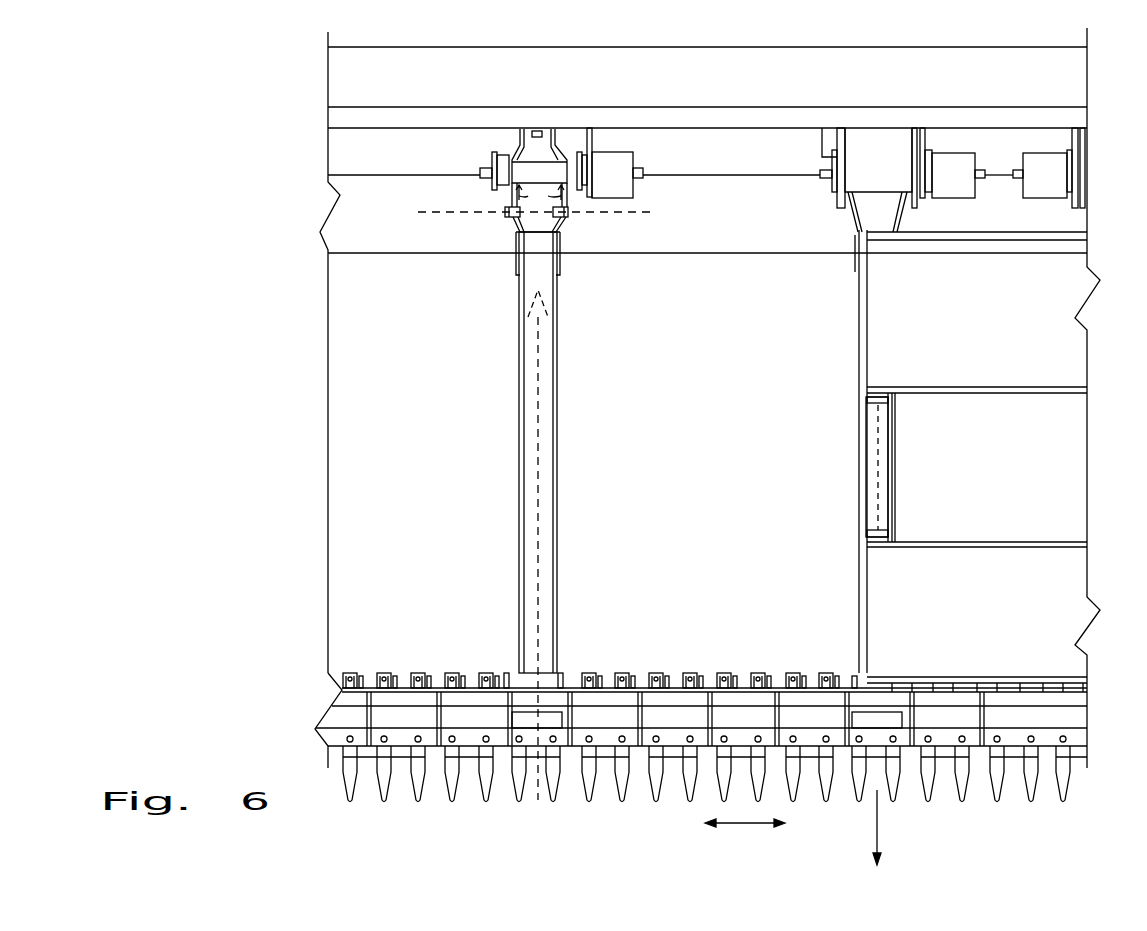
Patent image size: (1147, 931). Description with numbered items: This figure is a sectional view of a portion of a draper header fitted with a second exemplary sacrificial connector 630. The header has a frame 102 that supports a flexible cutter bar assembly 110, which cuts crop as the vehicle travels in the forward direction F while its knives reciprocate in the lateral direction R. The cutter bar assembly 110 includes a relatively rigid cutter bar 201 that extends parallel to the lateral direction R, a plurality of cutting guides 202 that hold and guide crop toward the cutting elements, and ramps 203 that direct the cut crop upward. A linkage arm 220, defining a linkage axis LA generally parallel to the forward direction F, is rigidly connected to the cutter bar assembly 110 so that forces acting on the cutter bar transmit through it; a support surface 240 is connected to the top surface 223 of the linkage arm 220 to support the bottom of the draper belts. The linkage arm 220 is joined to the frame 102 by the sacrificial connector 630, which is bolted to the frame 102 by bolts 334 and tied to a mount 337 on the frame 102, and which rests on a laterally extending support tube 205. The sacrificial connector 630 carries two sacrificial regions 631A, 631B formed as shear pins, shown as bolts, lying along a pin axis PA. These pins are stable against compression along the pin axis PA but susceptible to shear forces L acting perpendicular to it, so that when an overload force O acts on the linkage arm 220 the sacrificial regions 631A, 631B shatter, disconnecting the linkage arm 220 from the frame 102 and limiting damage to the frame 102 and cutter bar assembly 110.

The frame 102 is at (800, 72).
The cutter bar assembly 110 is at (701, 716).
The cutter bar 201 is at (506, 678).
The cutting guides 202 is at (483, 790).
The ramps 203 is at (457, 700).
The support tube 205 is at (397, 254).
The linkage arm 220 is at (558, 393).
The top surface 223 is at (868, 462).
The support surface 240 is at (1002, 334).
The bolt 334 is at (540, 129).
The mount 337 is at (590, 145).
The sacrificial connector 630 is at (458, 141).
The first sacrificial region 631A is at (505, 215).
The second sacrificial region 631B is at (568, 218).
The shear forces L is at (540, 195).
The linkage axis LA is at (541, 519).
The overload force O is at (537, 355).
The pin axis PA is at (630, 213).
The lateral direction R is at (745, 836).
The forward direction F is at (885, 827).